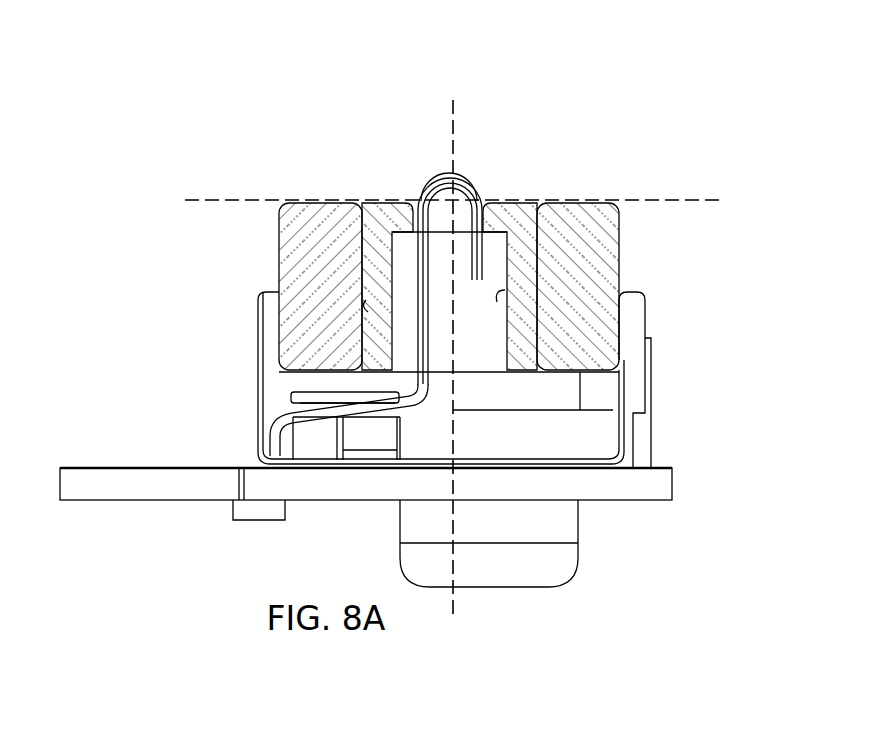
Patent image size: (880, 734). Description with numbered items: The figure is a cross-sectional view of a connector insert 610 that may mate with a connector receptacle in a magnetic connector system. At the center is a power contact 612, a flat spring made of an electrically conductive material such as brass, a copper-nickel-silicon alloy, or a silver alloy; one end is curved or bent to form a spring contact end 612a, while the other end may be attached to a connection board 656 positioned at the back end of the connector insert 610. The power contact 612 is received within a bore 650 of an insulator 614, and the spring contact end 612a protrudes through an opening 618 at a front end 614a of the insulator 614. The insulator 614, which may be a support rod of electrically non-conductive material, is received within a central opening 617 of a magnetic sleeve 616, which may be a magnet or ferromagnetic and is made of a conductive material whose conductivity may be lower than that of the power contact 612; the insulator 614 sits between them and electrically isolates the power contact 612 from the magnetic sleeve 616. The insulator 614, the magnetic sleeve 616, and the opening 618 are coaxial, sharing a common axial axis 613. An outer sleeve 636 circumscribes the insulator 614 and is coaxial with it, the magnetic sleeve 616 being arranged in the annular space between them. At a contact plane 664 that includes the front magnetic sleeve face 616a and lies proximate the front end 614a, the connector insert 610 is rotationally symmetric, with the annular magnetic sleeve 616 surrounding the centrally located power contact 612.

The connector insert 610 is at (358, 98).
The power contact 612 is at (420, 203).
The spring contact end 612a is at (440, 170).
The axial axis 613 is at (455, 117).
The insulator 614 is at (370, 220).
The front end 614a is at (517, 200).
The magnetic sleeve 616 is at (292, 250).
The front magnetic sleeve face 616a is at (597, 202).
The central opening 617 is at (368, 306).
The opening 618 is at (484, 200).
The outer sleeve 636 is at (636, 313).
The bore 650 is at (500, 296).
The connection board 656 is at (603, 487).
The contact plane 664 is at (692, 200).